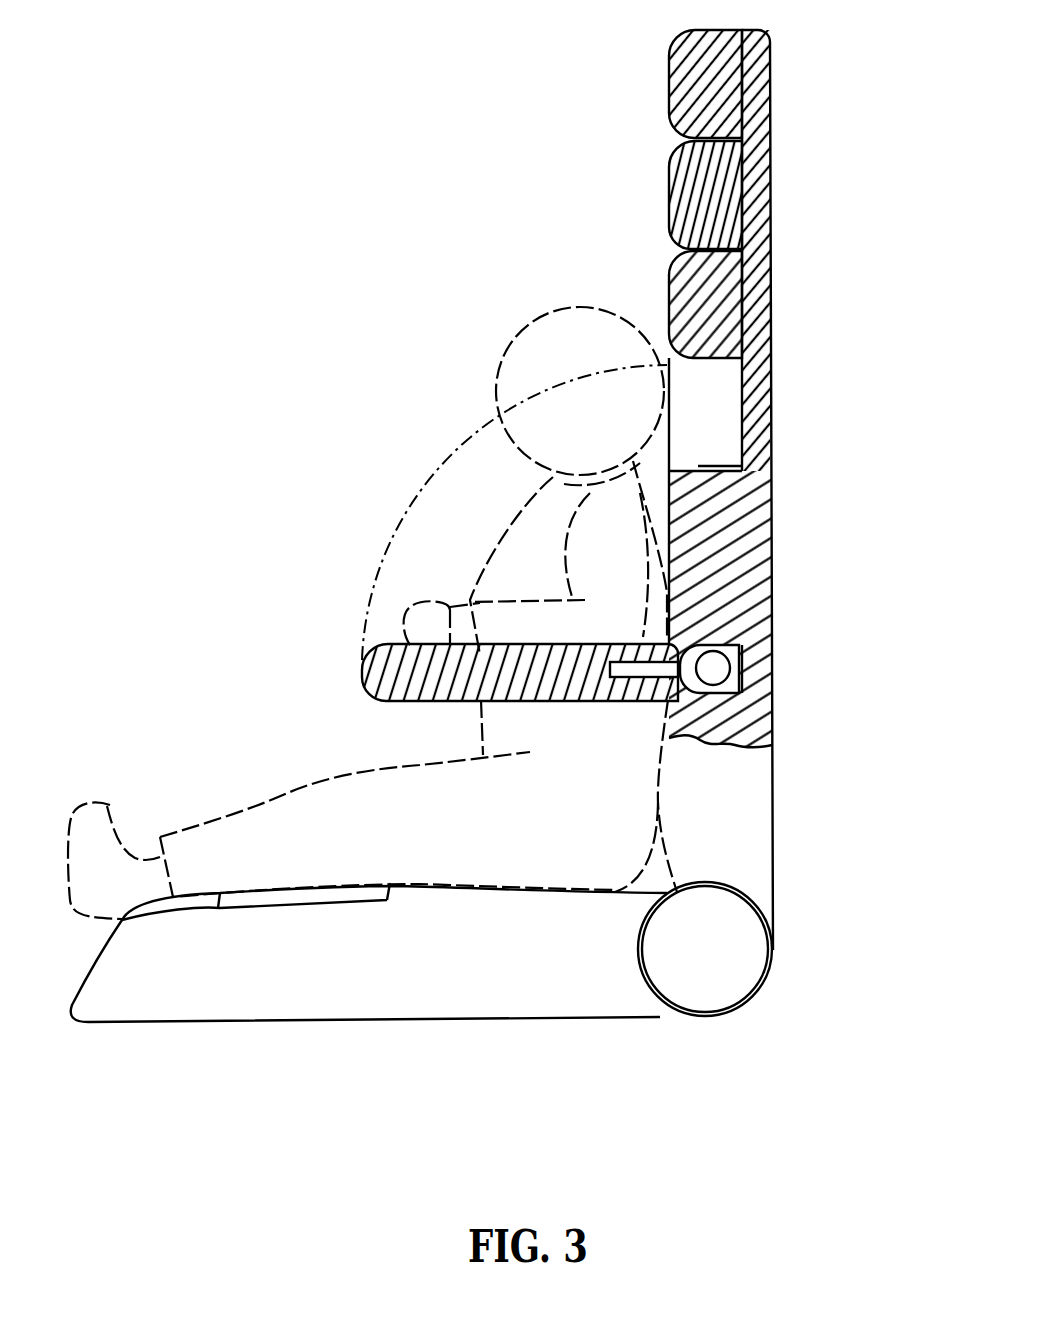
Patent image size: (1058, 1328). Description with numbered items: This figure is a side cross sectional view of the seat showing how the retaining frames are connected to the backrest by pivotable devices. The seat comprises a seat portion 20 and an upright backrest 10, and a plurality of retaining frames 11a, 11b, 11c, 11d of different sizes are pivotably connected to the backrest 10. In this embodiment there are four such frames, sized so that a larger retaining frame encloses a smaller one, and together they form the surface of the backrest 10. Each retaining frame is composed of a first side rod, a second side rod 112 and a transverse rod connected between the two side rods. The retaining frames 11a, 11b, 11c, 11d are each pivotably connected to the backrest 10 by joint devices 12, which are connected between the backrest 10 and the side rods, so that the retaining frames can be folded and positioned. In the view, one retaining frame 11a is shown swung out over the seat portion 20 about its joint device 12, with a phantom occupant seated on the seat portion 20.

The backrest 10 is at (755, 400).
The retaining frame 11a is at (372, 660).
The retaining frame 11b is at (740, 290).
The retaining frame 11c is at (755, 187).
The retaining frame 11d is at (755, 82).
The joint device 12 is at (697, 650).
The second side rod 112 is at (468, 613).
The seat portion 20 is at (378, 983).